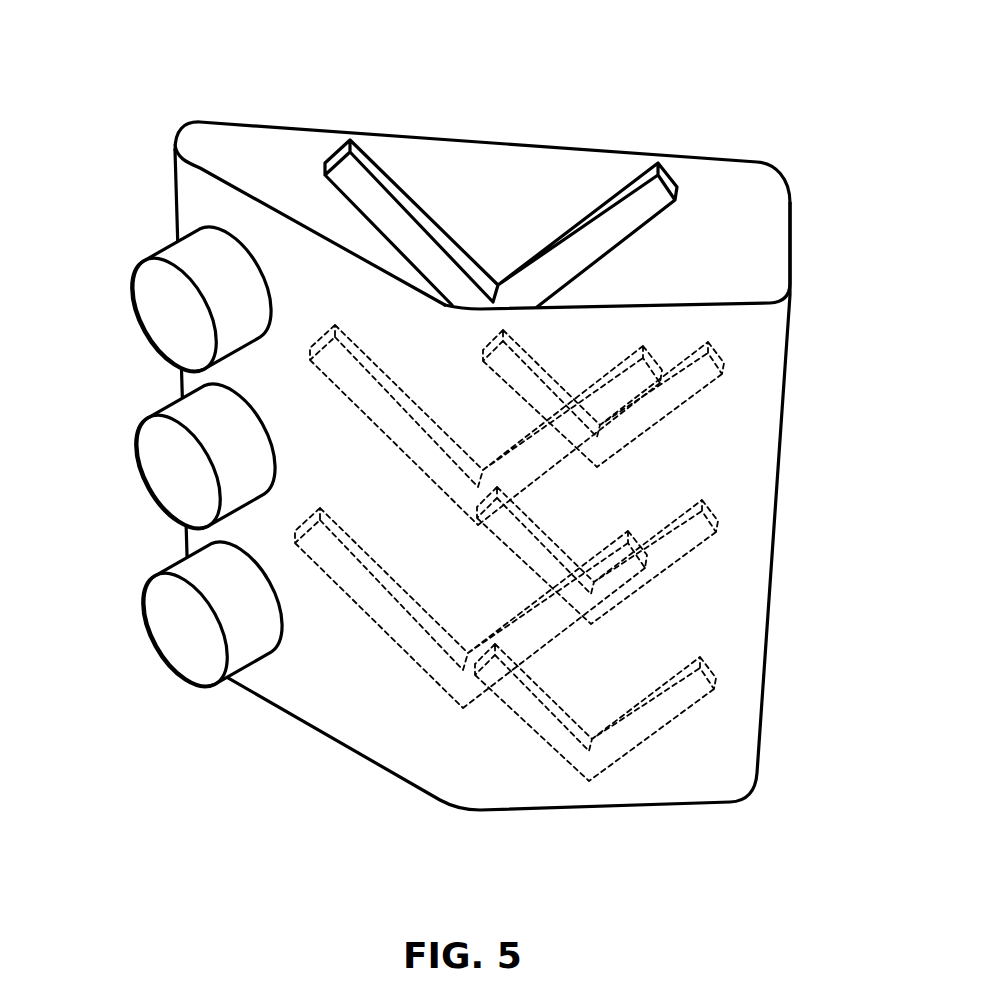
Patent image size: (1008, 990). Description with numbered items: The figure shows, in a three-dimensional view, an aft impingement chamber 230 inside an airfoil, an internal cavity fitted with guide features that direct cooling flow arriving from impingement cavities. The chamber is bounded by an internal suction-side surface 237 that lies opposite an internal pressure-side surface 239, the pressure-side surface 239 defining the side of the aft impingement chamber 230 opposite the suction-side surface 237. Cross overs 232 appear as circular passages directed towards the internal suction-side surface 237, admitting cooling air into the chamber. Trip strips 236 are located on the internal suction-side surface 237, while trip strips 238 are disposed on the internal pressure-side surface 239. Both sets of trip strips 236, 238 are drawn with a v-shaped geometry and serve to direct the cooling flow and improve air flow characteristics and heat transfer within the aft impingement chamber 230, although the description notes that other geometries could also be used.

The aft impingement chamber 230 is at (728, 187).
The cross overs 232 is at (157, 307).
The trip strips 236 is at (653, 187).
The internal suction-side surface 237 is at (437, 157).
The trip strips 238 is at (703, 375).
The internal pressure-side surface 239 is at (735, 300).